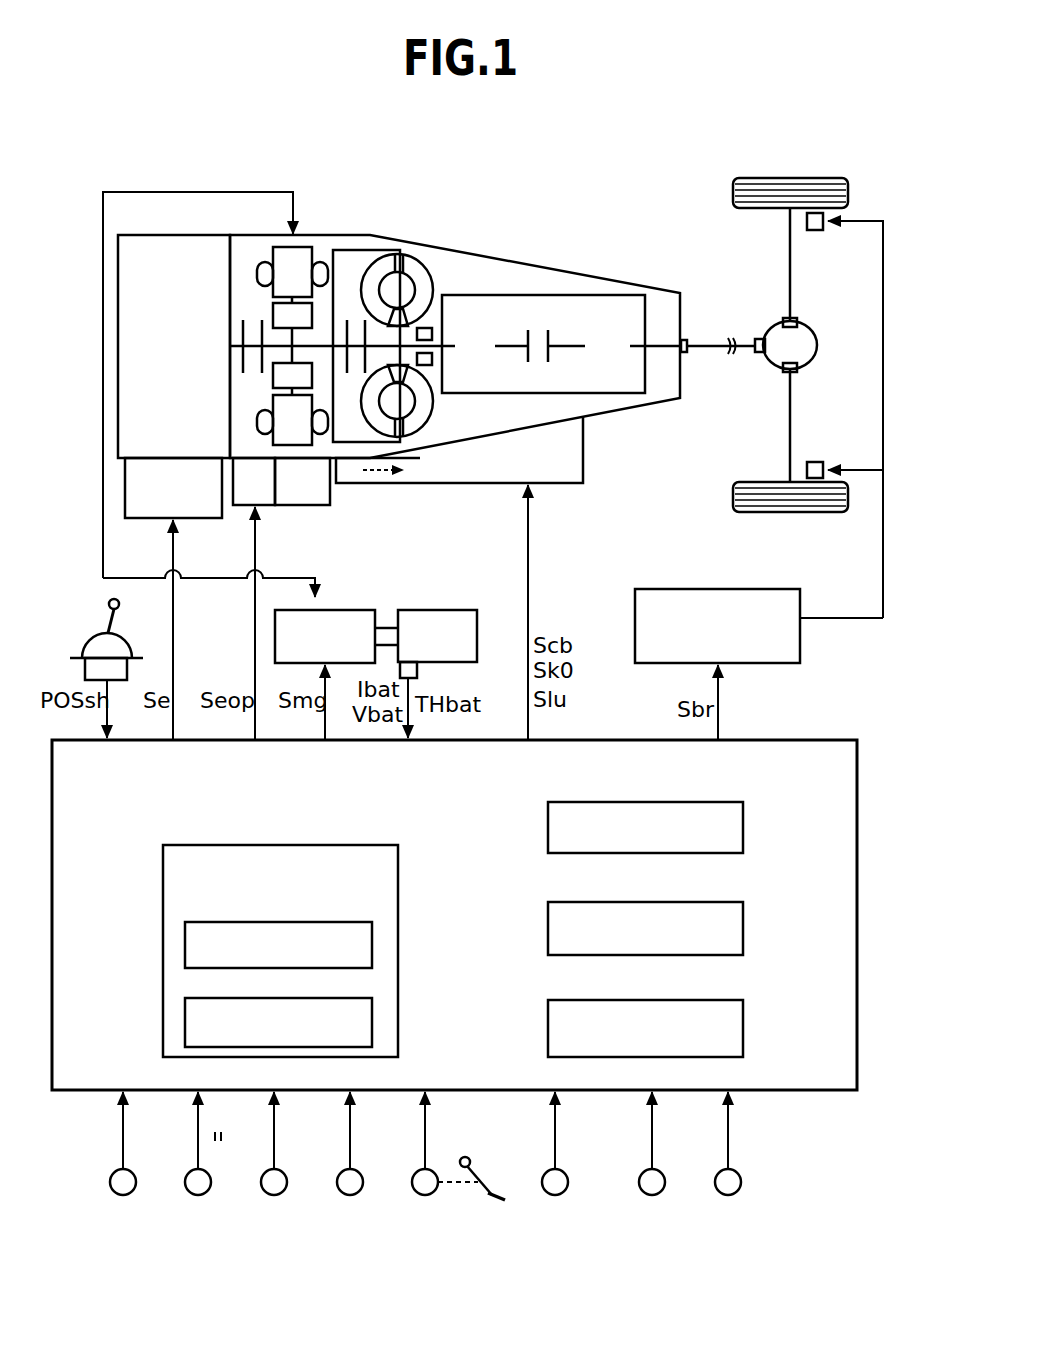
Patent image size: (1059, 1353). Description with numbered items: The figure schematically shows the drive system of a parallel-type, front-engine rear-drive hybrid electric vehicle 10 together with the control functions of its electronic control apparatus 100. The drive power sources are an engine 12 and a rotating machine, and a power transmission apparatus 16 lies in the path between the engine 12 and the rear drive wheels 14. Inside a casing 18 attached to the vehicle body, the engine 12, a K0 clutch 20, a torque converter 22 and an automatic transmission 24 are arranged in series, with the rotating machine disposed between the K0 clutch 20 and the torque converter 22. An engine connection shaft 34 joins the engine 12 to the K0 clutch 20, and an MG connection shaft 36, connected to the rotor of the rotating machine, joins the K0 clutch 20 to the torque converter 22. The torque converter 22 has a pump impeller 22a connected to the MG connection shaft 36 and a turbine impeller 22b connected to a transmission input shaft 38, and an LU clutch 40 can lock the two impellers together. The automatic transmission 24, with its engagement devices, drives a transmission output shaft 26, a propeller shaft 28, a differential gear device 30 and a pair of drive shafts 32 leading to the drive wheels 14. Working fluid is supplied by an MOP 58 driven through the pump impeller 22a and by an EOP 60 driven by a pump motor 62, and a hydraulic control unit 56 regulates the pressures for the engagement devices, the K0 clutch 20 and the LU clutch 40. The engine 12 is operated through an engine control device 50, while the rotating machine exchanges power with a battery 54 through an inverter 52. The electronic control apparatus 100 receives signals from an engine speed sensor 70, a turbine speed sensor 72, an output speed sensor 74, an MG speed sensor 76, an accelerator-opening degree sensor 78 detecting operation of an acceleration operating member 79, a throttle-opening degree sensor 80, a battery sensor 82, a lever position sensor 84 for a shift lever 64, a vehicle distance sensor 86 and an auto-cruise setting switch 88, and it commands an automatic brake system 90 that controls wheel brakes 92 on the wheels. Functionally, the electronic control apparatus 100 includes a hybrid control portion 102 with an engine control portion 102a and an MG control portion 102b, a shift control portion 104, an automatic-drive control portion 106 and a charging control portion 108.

The hybrid electric vehicle 10 is at (637, 138).
The engine 12 is at (150, 252).
The drive wheels 14 is at (735, 195).
The power transmission apparatus 16 is at (440, 183).
The casing 18 is at (320, 234).
The K0 clutch 20 is at (243, 362).
The torque converter 22 is at (413, 360).
The pump impeller 22a is at (415, 422).
The turbine impeller 22b is at (370, 413).
The automatic transmission 24 is at (600, 297).
The transmission output shaft 26 is at (638, 346).
The propeller shaft 28 is at (712, 348).
The differential gear device 30 is at (798, 335).
The drive shafts 32 is at (790, 274).
The engine connection shaft 34 is at (236, 340).
The MG connection shaft 36 is at (273, 343).
The transmission input shaft 38 is at (448, 346).
The LU clutch 40 is at (340, 323).
The engine control device 50 is at (214, 518).
The inverter 52 is at (338, 612).
The battery 54 is at (435, 620).
The hydraulic control unit 56 is at (573, 430).
The MOP 58 is at (425, 363).
The EOP 60 is at (318, 505).
The pump motor 62 is at (262, 505).
The shift lever 64 is at (107, 618).
The engine speed sensor 70 is at (123, 1195).
The turbine speed sensor 72 is at (198, 1195).
The output speed sensor 74 is at (274, 1195).
The MG speed sensor 76 is at (350, 1195).
The accelerator-opening degree sensor 78 is at (425, 1195).
The acceleration operating member 79 is at (497, 1185).
The throttle-opening degree sensor 80 is at (555, 1195).
The battery sensor 82 is at (418, 670).
The lever position sensor 84 is at (85, 673).
The vehicle distance sensor 86 is at (652, 1195).
The auto-cruise setting switch 88 is at (728, 1195).
The automatic brake system 90 is at (683, 590).
The wheel brakes 92 is at (815, 232).
The electronic control apparatus 100 is at (811, 748).
The hybrid control portion 102 is at (322, 852).
The engine control portion 102a is at (305, 928).
The MG control portion 102b is at (305, 1000).
The shift control portion 104 is at (683, 803).
The automatic-drive control portion 106 is at (683, 903).
The charging control portion 108 is at (683, 1002).